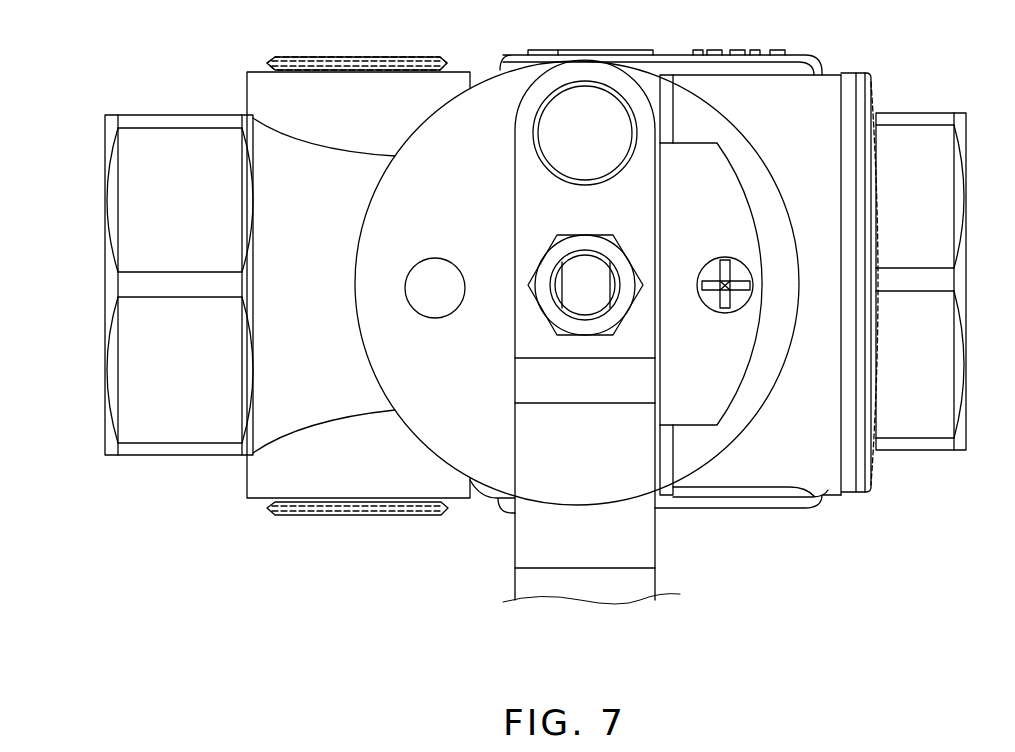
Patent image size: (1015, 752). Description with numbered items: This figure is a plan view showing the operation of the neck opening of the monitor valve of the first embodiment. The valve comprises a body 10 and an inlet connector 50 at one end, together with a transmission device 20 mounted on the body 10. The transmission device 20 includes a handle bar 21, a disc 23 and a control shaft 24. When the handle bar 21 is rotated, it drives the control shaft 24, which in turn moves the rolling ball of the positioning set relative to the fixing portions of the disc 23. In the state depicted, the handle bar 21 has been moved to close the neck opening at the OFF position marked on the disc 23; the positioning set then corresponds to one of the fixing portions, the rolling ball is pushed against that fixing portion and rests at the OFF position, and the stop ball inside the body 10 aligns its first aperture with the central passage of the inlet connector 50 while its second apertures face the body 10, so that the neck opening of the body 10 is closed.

The body 10 is at (815, 549).
The transmission device 20 is at (483, 530).
The handle bar 21 is at (658, 552).
The disc 23 is at (412, 382).
The control shaft 24 is at (585, 283).
The inlet connector 50 is at (940, 470).